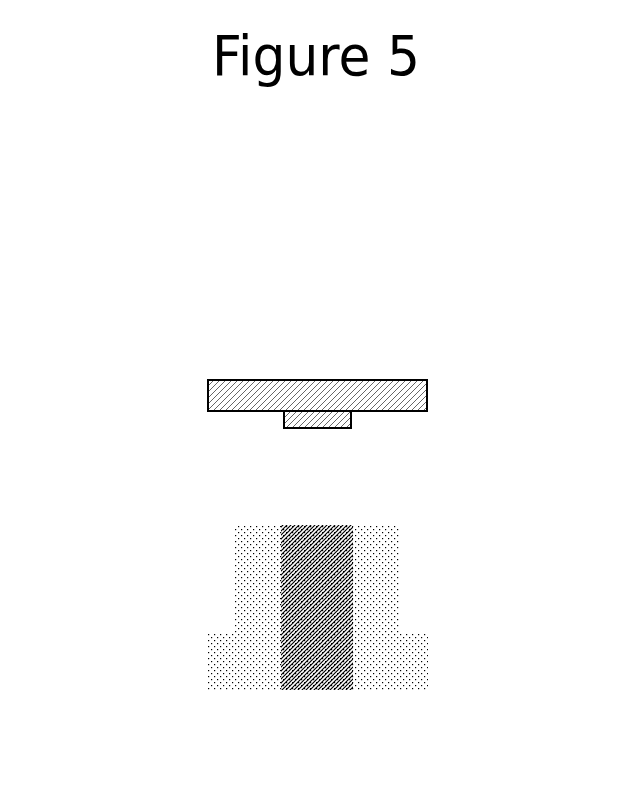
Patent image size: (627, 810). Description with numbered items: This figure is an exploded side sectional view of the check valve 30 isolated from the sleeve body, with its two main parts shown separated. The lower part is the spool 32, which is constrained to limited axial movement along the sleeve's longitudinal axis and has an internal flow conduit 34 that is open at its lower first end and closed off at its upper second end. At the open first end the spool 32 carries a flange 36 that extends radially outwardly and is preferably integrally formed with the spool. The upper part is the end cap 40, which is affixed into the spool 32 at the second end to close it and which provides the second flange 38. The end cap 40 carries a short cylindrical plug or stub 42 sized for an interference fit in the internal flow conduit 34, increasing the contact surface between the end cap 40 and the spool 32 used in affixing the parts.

The check valve 30 is at (319, 657).
The spool 32 is at (392, 598).
The internal flow conduit 34 is at (307, 638).
The flange 36 is at (407, 657).
The second flange 38 is at (417, 395).
The end cap 40 is at (309, 405).
The stub 42 is at (337, 417).